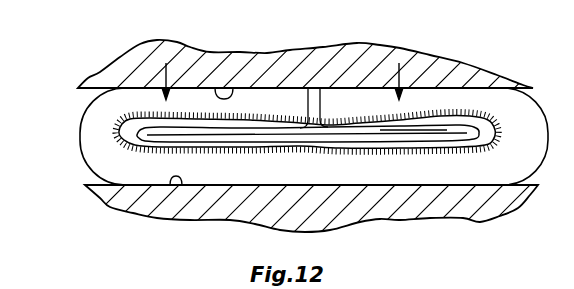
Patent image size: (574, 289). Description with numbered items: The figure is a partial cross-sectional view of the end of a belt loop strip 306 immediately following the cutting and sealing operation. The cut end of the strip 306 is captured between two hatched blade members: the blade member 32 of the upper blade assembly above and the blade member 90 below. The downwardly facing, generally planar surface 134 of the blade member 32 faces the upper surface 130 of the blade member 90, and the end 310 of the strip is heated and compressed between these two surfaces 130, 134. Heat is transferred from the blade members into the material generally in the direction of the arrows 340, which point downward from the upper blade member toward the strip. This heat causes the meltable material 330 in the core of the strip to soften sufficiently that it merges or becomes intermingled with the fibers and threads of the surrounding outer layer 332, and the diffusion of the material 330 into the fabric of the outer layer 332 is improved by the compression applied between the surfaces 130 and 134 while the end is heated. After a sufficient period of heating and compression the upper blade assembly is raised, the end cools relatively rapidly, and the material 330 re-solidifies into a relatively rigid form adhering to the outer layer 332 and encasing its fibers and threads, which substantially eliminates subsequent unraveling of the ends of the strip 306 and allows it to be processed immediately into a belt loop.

The blade member 32 is at (132, 47).
The blade member 90 is at (100, 192).
The end 310 is at (96, 106).
The arrows 340 is at (170, 62).
The surface 134 is at (229, 97).
The surface 130 is at (176, 188).
The strip 306 is at (82, 143).
The outer layer 332 is at (103, 162).
The meltable material 330 is at (415, 130).